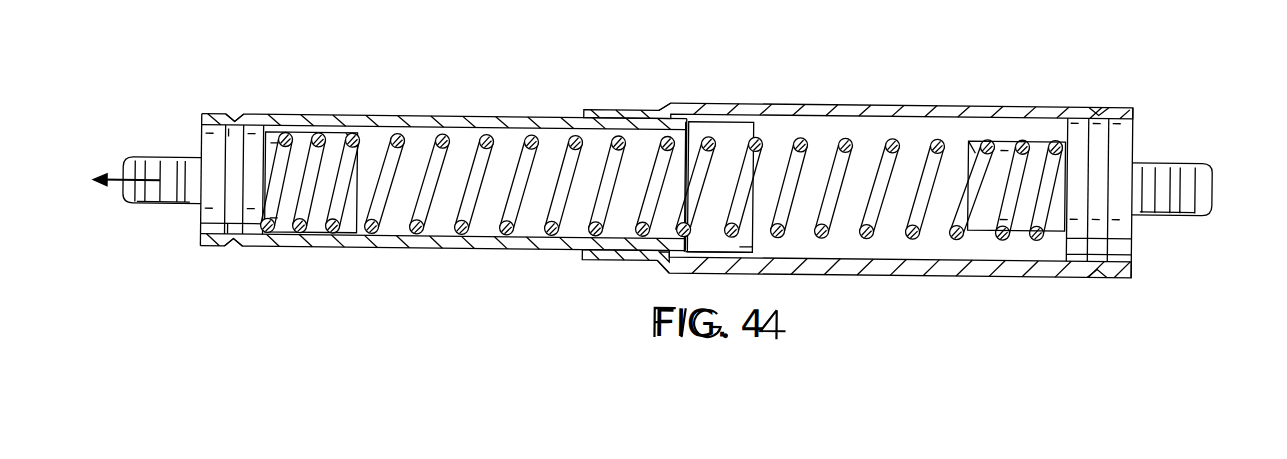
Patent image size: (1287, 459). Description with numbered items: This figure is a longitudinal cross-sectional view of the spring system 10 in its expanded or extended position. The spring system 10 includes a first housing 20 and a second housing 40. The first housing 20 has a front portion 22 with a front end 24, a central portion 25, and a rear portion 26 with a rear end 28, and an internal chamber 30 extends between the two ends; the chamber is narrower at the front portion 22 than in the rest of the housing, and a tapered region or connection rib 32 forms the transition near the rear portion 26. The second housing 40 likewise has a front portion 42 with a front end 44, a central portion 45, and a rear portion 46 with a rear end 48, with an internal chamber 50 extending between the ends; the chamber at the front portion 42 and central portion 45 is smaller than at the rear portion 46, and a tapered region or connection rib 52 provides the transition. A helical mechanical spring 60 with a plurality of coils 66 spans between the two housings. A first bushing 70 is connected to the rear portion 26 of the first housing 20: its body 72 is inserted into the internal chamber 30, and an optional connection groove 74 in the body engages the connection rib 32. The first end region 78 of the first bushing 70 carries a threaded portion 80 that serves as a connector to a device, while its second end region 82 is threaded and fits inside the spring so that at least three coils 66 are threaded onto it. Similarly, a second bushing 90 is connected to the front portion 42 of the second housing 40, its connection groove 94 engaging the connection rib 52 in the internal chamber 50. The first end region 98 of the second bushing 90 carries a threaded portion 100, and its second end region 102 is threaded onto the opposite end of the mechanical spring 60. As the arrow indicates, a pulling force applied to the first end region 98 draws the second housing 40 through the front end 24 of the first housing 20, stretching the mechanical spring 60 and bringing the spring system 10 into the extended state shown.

The spring system 10 is at (672, 57).
The first housing 20 is at (937, 279).
The front portion 22 is at (602, 111).
The front end 24 is at (577, 108).
The central portion 25 is at (945, 99).
The rear portion 26 is at (1085, 281).
The rear end 28 is at (1132, 105).
The internal chamber 30 is at (777, 132).
The connection rib 32 is at (660, 103).
The second housing 40 is at (403, 113).
The front portion 42 is at (247, 116).
The front end 44 is at (200, 125).
The central portion 45 is at (428, 250).
The rear portion 46 is at (725, 255).
The rear end 48 is at (753, 252).
The internal chamber 50 is at (490, 225).
The connection rib 52 is at (230, 134).
The mechanical spring 60 is at (843, 135).
The coils 66 is at (430, 129).
The first bushing 70 is at (1142, 140).
The body 72 is at (1123, 128).
The connection groove 74 is at (1098, 225).
The first end region 78 is at (1170, 213).
The threaded portion 80 is at (1188, 158).
The second end region 82 is at (1022, 220).
The second bushing 90 is at (188, 225).
The connection groove 94 is at (223, 238).
The first end region 98 is at (142, 160).
The threaded portion 100 is at (138, 209).
The second end region 102 is at (298, 149).